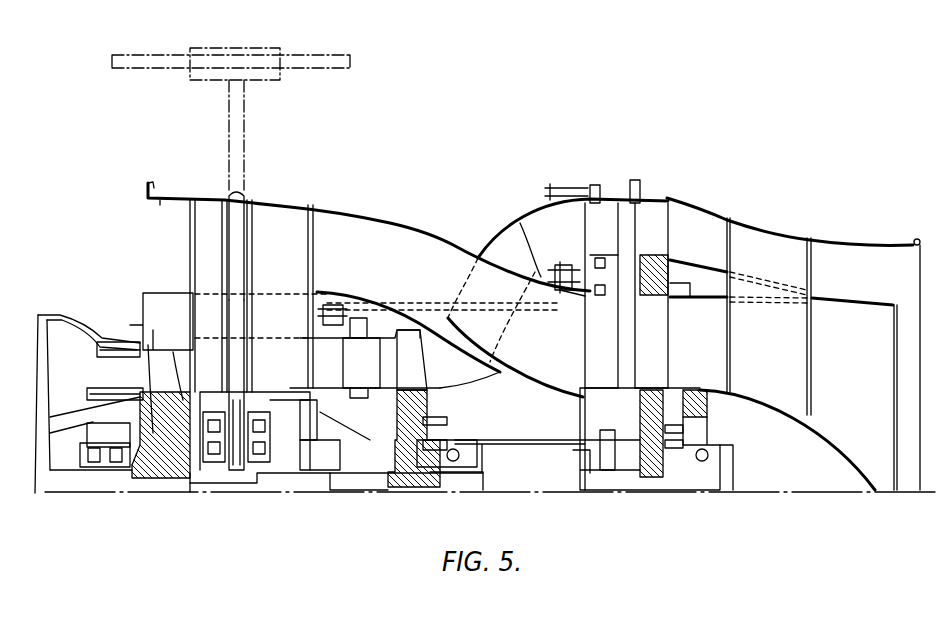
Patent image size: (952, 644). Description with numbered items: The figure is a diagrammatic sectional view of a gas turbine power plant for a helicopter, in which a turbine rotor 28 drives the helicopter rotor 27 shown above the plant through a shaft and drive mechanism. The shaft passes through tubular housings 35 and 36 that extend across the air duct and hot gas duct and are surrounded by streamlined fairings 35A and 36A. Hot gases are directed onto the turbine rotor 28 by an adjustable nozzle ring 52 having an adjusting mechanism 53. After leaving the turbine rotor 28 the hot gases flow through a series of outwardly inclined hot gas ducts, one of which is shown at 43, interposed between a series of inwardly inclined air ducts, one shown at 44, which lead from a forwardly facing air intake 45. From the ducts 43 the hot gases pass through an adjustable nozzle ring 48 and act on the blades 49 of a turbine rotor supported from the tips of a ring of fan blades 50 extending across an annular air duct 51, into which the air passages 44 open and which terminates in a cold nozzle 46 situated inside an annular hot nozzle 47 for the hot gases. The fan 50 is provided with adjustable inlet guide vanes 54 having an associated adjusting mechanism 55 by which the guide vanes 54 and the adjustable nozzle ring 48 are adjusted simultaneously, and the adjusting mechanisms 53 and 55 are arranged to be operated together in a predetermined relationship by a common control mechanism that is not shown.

The helicopter rotor 27 is at (344, 57).
The turbine rotor 28 is at (420, 375).
The tubular housing 35 is at (254, 232).
The streamlined fairing 35A is at (200, 272).
The tubular housing 36 is at (254, 360).
The streamlined fairing 36A is at (208, 356).
The hot gas duct 43 is at (535, 222).
The air duct 44 is at (560, 355).
The air intake 45 is at (160, 248).
The cold nozzle 46 is at (895, 376).
The hot nozzle 47 is at (920, 287).
The adjustable nozzle ring 48 is at (615, 239).
The blades 49 is at (666, 239).
The fan blades 50 is at (665, 355).
The annular air duct 51 is at (707, 355).
The adjustable nozzle ring 52 is at (372, 375).
The adjusting mechanism 53 is at (422, 305).
The inlet guide vanes 54 is at (612, 355).
The adjusting mechanism 55 is at (553, 288).